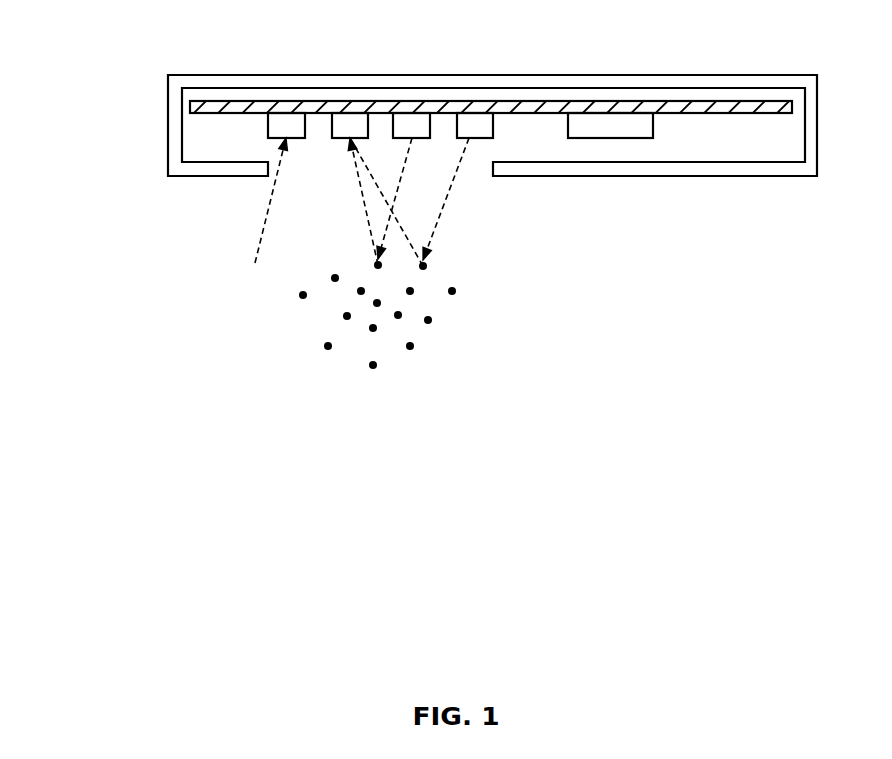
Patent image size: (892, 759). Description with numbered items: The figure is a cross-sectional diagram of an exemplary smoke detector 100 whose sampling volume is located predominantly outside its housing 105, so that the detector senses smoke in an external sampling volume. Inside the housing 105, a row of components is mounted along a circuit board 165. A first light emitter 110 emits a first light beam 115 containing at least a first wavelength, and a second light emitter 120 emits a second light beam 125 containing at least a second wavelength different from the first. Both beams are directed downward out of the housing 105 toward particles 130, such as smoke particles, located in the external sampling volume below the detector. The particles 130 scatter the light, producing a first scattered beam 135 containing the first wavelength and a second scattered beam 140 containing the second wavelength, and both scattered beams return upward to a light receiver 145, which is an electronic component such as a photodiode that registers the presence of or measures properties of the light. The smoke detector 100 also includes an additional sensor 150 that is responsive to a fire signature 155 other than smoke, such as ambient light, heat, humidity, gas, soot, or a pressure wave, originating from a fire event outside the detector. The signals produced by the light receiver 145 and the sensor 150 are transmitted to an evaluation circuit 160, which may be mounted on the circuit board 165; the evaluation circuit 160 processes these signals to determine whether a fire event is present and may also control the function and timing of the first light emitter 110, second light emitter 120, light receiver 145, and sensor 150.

The smoke detector 100 is at (128, 82).
The housing 105 is at (783, 168).
The first light emitter 110 is at (407, 125).
The first light beam 115 is at (400, 189).
The second light emitter 120 is at (469, 123).
The second light beam 125 is at (473, 149).
The particles 130 is at (462, 312).
The first scattered beam 135 is at (370, 240).
The second scattered beam 140 is at (405, 227).
The light receiver 145 is at (344, 125).
The sensor 150 is at (282, 125).
The fire signature 155 is at (270, 204).
The evaluation circuit 160 is at (610, 128).
The circuit board 165 is at (720, 107).